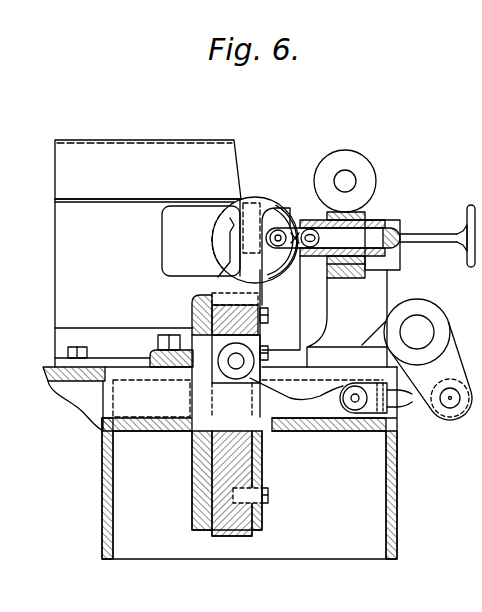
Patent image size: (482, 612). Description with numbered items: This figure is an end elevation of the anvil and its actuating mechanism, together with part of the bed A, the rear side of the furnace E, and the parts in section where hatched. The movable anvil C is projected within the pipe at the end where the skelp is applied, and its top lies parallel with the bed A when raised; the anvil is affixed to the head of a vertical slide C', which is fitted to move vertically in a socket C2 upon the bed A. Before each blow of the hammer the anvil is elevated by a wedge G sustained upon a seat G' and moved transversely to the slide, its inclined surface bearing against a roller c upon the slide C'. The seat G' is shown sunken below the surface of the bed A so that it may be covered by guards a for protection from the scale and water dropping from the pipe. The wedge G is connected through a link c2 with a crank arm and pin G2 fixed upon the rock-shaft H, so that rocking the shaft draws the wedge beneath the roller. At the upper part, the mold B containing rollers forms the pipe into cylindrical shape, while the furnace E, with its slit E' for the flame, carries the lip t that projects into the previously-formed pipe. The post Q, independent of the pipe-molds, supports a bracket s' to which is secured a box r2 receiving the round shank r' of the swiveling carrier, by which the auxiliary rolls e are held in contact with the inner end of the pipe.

The furnace E is at (148, 253).
The slit E' is at (124, 207).
The lip t is at (212, 243).
The movable anvil C is at (251, 215).
The mold B is at (287, 207).
The auxiliary rolls e is at (274, 250).
The round shank r' is at (370, 230).
The box r2 is at (367, 212).
The bracket s' is at (362, 261).
The post Q is at (329, 309).
The socket C2 is at (192, 497).
The roller c is at (262, 346).
The vertical slide C' is at (240, 483).
The bed A is at (102, 452).
The wedge G is at (220, 392).
The seat G' is at (232, 399).
The crank arm and pin G2 is at (443, 367).
The link c2 is at (407, 400).
The rock-shaft H is at (427, 297).
The guards a is at (373, 342).